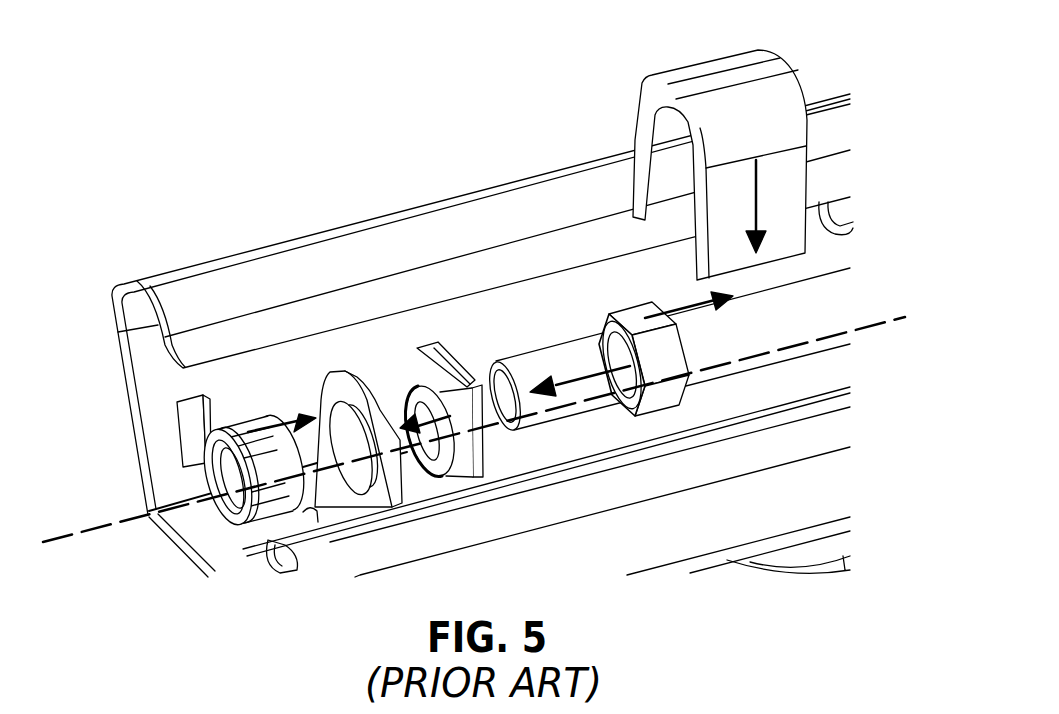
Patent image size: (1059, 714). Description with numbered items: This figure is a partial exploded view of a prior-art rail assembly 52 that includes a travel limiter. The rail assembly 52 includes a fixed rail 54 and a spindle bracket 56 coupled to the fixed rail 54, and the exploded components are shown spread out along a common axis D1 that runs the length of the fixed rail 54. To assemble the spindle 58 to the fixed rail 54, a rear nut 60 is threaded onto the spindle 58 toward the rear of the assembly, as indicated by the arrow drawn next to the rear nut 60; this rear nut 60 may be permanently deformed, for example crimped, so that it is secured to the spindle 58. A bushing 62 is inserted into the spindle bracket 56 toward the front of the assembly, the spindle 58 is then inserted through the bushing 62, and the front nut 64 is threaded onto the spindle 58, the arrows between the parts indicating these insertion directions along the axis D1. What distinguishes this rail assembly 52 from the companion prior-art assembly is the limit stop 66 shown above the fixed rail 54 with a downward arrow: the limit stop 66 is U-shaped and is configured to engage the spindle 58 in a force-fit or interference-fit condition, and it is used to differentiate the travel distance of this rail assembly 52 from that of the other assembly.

The rail assembly 52 is at (346, 186).
The fixed rail 54 is at (643, 540).
The spindle bracket 56 is at (331, 395).
The spindle 58 is at (767, 363).
The rear nut 60 is at (640, 312).
The bushing 62 is at (419, 346).
The front nut 64 is at (183, 455).
The limit stop 66 is at (750, 70).
The axis direction D1 is at (110, 524).